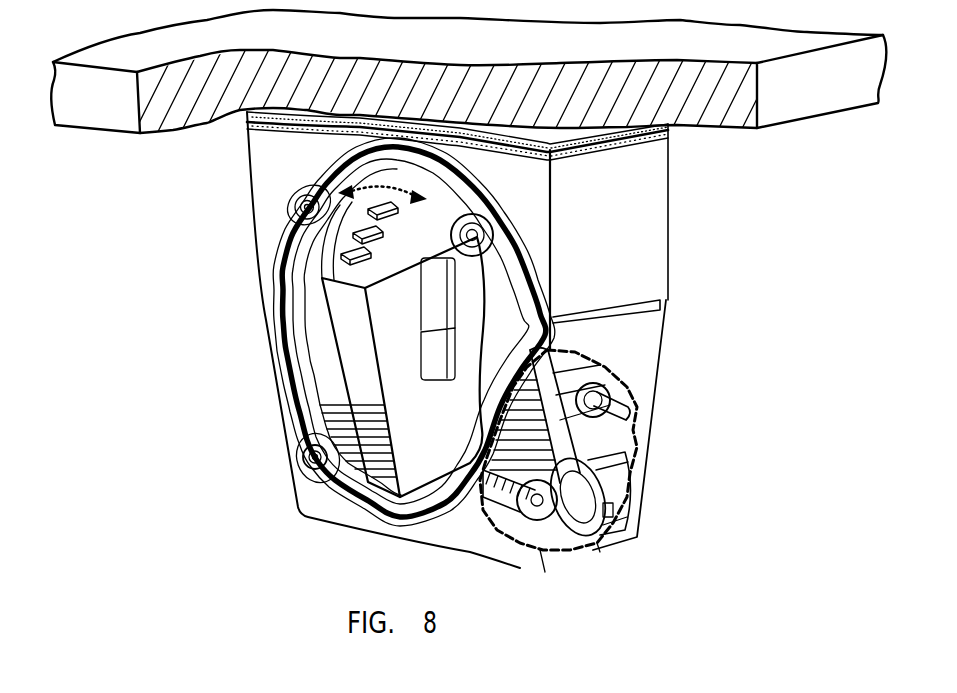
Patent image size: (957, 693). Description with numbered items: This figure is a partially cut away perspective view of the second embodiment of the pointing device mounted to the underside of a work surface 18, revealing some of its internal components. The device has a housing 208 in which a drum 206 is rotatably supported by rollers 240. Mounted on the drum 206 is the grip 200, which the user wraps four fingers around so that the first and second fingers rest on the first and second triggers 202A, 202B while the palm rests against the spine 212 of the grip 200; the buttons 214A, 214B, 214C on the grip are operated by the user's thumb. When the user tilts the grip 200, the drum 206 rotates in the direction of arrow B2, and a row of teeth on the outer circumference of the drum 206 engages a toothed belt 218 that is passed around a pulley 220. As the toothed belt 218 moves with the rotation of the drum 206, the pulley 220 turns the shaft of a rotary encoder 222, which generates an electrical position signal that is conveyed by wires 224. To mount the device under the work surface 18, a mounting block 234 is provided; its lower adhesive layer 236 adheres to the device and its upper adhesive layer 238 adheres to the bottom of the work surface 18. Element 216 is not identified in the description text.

The work surface 18 is at (447, 51).
The upper adhesive layer 238 is at (669, 140).
The mounting block 234 is at (625, 237).
The lower adhesive layer 236 is at (661, 303).
The housing 208 is at (631, 348).
The drum 206 is at (318, 333).
The spine 212 is at (353, 345).
The grip 200 is at (446, 443).
The first trigger 202A is at (470, 303).
The second trigger 202B is at (485, 332).
The button 214A is at (365, 211).
The button 214B is at (353, 236).
The button 214C is at (342, 257).
The arrow B2 is at (392, 186).
The rollers 240 is at (297, 218).
The toothed belt 218 is at (477, 490).
The bracket arm 216 is at (473, 497).
The pulley 220 is at (540, 530).
The rotary encoder 222 is at (597, 474).
The wires 224 is at (598, 545).